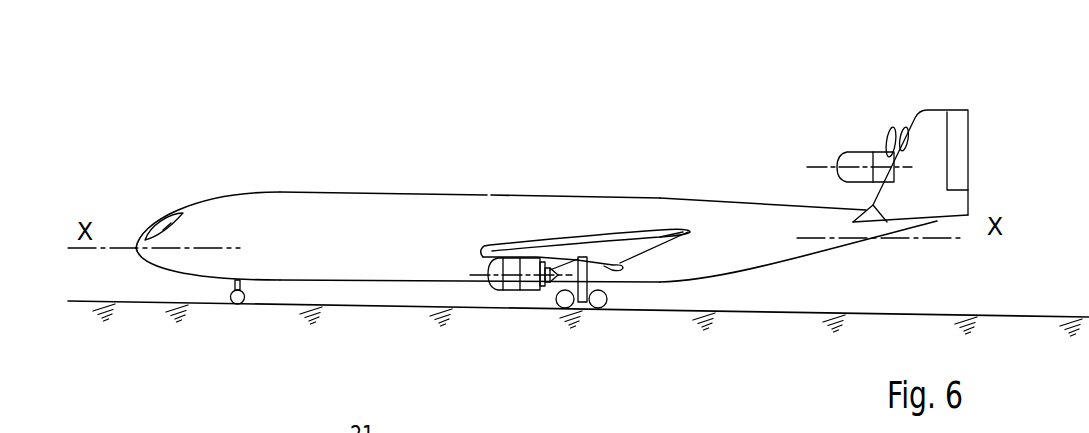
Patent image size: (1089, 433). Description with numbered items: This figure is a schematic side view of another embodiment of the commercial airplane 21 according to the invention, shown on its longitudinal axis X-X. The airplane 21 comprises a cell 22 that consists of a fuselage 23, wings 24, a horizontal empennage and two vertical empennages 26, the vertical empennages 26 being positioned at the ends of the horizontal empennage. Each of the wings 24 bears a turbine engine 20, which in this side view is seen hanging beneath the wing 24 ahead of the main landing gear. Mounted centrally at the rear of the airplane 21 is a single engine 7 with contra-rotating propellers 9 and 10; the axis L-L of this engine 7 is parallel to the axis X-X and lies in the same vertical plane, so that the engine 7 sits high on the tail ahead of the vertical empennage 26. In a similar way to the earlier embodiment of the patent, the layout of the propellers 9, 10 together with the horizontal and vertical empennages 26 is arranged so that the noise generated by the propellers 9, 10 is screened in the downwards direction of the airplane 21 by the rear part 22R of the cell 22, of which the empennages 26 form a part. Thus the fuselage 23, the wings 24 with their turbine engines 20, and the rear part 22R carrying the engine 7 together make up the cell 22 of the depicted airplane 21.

The commercial airplane 21 is at (446, 128).
The cell 22 is at (554, 176).
The fuselage 23 is at (313, 208).
The rear part of the cell 22R is at (990, 152).
The vertical empennage 26 is at (927, 140).
The engine 7 is at (857, 158).
The contra-rotating propeller 9 is at (890, 128).
The contra-rotating propeller 10 is at (905, 127).
The wing 24 is at (637, 242).
The turbine engine 20 is at (512, 280).